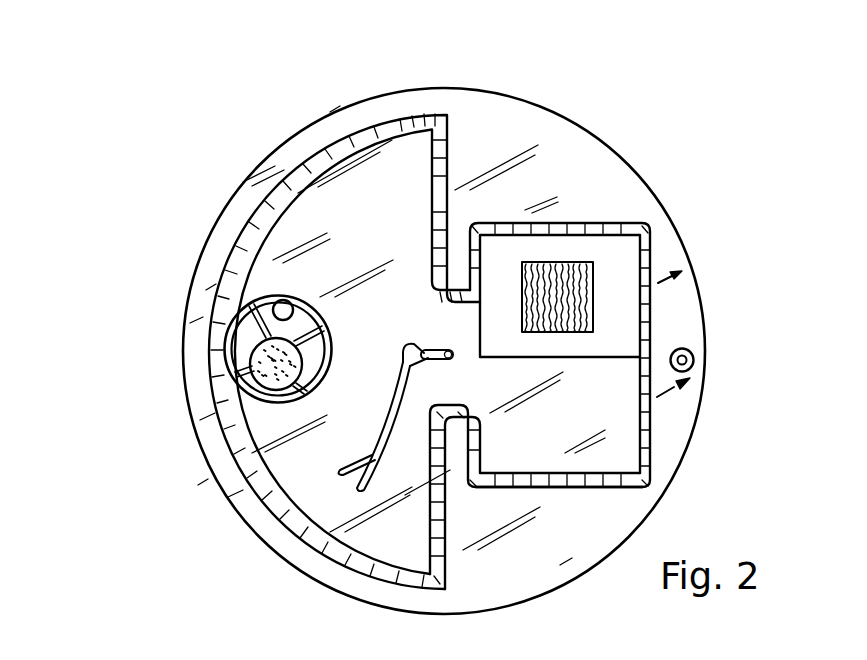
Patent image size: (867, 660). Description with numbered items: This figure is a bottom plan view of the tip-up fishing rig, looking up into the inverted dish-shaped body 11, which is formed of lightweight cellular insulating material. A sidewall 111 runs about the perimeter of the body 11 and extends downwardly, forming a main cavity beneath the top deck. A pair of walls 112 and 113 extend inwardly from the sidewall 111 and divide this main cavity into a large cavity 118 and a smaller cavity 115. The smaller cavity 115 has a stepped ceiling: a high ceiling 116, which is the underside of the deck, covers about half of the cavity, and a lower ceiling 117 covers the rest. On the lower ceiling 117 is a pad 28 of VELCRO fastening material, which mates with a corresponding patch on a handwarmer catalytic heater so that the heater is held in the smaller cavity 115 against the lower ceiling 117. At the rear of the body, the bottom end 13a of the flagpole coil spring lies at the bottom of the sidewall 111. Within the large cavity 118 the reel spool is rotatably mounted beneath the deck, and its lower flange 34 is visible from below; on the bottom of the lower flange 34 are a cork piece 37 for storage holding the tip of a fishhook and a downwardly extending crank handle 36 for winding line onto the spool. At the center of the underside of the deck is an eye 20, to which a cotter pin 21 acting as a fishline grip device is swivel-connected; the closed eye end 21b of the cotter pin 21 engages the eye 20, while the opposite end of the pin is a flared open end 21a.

The body 11 is at (214, 162).
The sidewall 111 is at (354, 104).
The wall 112 is at (431, 218).
The wall 113 is at (478, 443).
The smaller cavity 115 is at (612, 448).
The high ceiling 116 is at (602, 382).
The lower ceiling 117 is at (606, 282).
The large cavity 118 is at (278, 242).
The bottom end of coil spring 13a is at (690, 349).
The eye 20 is at (446, 360).
The cotter pin 21 is at (384, 433).
The flared open end 21a is at (352, 480).
The closed eye end 21b is at (400, 378).
The pad of VELCRO fastening material 28 is at (556, 265).
The lower flange 34 is at (242, 333).
The crank handle 36 is at (272, 300).
The cork piece 37 is at (243, 387).